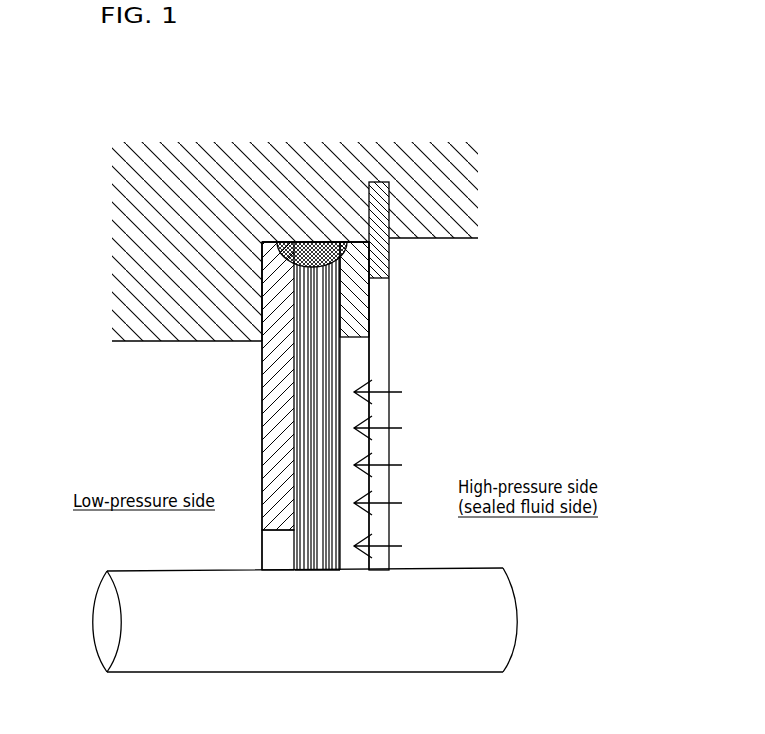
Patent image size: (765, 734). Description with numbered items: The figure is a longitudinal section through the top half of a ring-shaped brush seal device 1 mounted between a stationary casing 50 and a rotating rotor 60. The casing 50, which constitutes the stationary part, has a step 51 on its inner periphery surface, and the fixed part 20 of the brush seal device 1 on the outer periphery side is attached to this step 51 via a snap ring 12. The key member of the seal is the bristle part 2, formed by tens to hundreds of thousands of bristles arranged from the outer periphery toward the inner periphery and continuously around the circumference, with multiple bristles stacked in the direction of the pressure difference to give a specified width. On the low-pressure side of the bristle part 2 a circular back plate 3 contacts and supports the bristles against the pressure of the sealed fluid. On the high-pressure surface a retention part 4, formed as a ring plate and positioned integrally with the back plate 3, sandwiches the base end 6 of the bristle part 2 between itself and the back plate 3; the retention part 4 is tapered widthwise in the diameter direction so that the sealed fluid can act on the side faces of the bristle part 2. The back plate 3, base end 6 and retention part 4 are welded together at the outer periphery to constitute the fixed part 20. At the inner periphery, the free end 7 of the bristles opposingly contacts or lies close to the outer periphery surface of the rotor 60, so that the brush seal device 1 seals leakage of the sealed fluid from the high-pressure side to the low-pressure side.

The brush seal device 1 is at (356, 368).
The bristle part 2 is at (310, 470).
The back plate 3 is at (272, 398).
The retention part 4 is at (368, 314).
The base end 6 is at (308, 240).
The free end 7 is at (318, 574).
The snap ring 12 is at (388, 186).
The fixed part 20 is at (284, 240).
The casing 50 is at (158, 268).
The step 51 is at (258, 262).
The rotor 60 is at (448, 625).